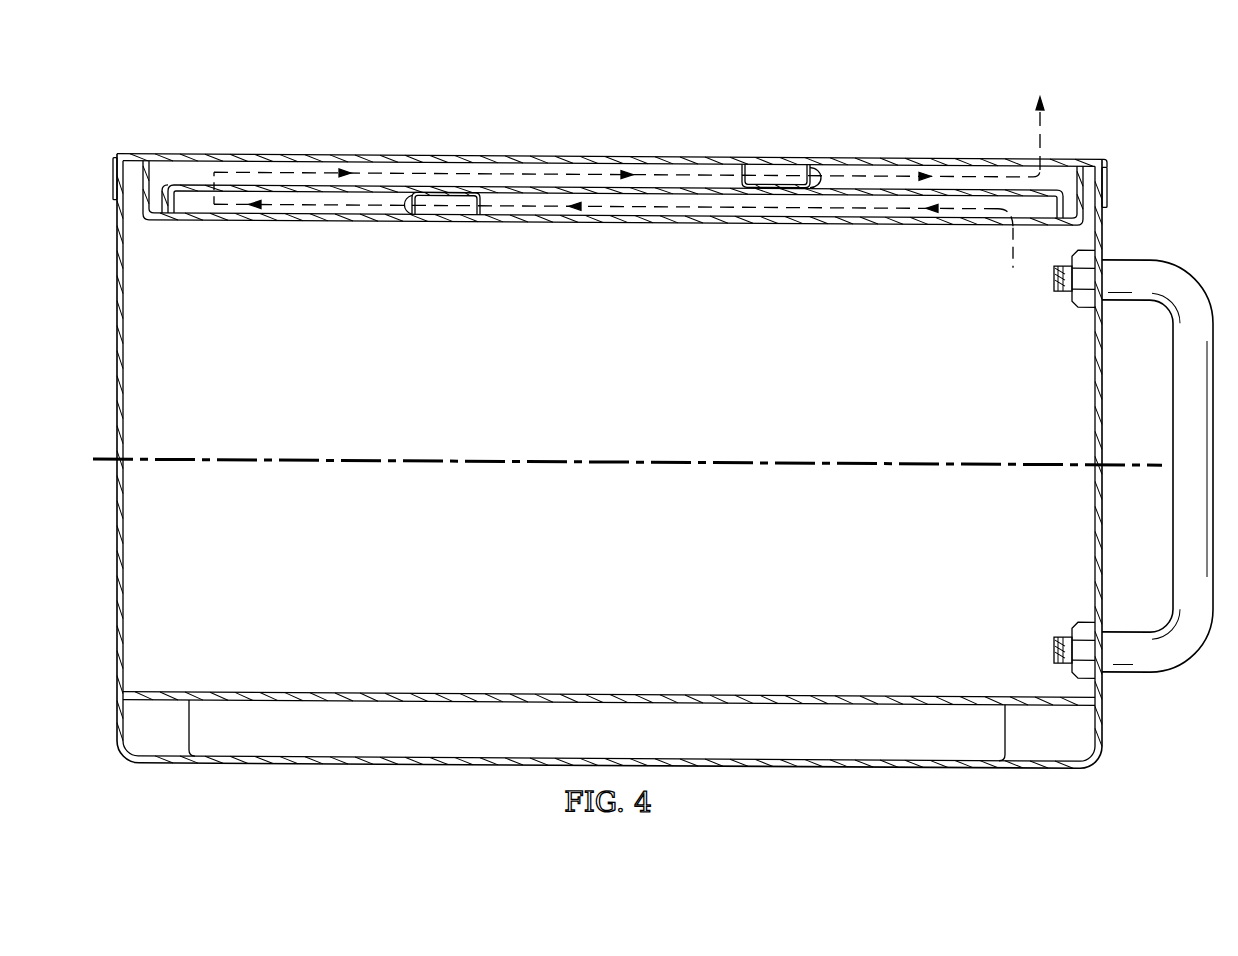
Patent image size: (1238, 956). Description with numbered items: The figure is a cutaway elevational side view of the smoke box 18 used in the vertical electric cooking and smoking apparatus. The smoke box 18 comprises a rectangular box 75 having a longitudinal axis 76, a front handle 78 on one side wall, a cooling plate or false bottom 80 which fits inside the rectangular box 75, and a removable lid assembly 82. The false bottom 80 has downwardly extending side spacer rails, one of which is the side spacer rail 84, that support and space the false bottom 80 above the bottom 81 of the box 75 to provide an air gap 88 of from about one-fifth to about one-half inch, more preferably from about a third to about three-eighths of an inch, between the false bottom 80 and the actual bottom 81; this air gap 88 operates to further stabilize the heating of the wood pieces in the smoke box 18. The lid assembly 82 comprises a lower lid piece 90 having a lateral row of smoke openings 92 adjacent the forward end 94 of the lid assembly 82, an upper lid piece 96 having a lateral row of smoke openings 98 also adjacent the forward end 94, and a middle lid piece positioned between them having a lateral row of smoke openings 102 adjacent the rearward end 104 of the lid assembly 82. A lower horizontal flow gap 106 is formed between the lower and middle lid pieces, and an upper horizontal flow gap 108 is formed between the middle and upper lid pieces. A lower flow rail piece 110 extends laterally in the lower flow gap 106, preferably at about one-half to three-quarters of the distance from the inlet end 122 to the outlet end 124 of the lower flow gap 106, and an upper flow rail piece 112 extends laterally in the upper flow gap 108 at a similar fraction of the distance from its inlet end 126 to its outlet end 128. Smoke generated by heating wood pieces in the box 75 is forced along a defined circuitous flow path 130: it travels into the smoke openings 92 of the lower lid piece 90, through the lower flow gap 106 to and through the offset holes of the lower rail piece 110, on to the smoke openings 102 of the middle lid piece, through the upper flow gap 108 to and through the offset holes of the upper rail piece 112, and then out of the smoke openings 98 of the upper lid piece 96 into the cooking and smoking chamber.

The smoke box 18 is at (1140, 106).
The rectangular box 75 is at (1100, 515).
The longitudinal axis 76 is at (838, 461).
The front handle 78 is at (1164, 254).
The false bottom 80 is at (388, 690).
The bottom 81 is at (838, 753).
The lid assembly 82 is at (461, 145).
The side spacer rail 84 is at (274, 762).
The air gap 88 is at (1087, 722).
The lower lid piece 90 is at (270, 222).
The smoke openings 92 is at (1000, 233).
The forward end 94 is at (1090, 186).
The upper lid piece 96 is at (893, 154).
The smoke openings 98 is at (1022, 140).
The smoke openings 102 is at (199, 169).
The rearward end 104 is at (112, 166).
The lower horizontal flow gap 106 is at (800, 221).
The upper horizontal flow gap 108 is at (342, 170).
The lower flow rail piece 110 is at (396, 218).
The upper flow rail piece 112 is at (830, 172).
The inlet end 122 is at (1026, 234).
The outlet end 124 is at (191, 203).
The inlet end 126 is at (188, 166).
The outlet end 128 is at (1046, 168).
The circuitous flow path 130 is at (677, 168).